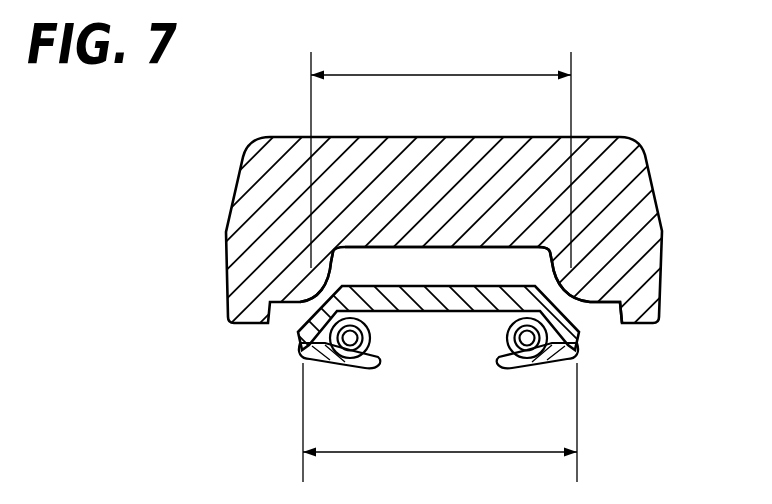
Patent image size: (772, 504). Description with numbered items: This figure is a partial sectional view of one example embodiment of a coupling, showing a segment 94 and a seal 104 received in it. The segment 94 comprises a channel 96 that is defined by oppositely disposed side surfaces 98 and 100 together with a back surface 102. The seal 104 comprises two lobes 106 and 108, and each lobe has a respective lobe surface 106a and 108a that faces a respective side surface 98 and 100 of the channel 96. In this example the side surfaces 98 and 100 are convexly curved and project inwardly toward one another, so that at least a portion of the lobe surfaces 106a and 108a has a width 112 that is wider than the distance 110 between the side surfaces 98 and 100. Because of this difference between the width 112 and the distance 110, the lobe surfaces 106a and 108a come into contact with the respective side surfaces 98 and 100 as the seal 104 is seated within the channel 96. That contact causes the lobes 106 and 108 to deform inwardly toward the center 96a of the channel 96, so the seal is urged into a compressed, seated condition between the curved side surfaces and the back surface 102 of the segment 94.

The segment 94 is at (282, 165).
The channel 96 is at (500, 234).
The center of channel 96a is at (437, 265).
The side surface 98 is at (318, 282).
The side surface 100 is at (570, 284).
The back surface 102 is at (557, 253).
The seal 104 is at (485, 312).
The lobe 106 is at (327, 368).
The lobe surface 106a is at (303, 320).
The lobe 108 is at (590, 352).
The lobe surface 108a is at (580, 323).
The distance between side surfaces 110 is at (438, 75).
The width of lobe surfaces 112 is at (480, 453).